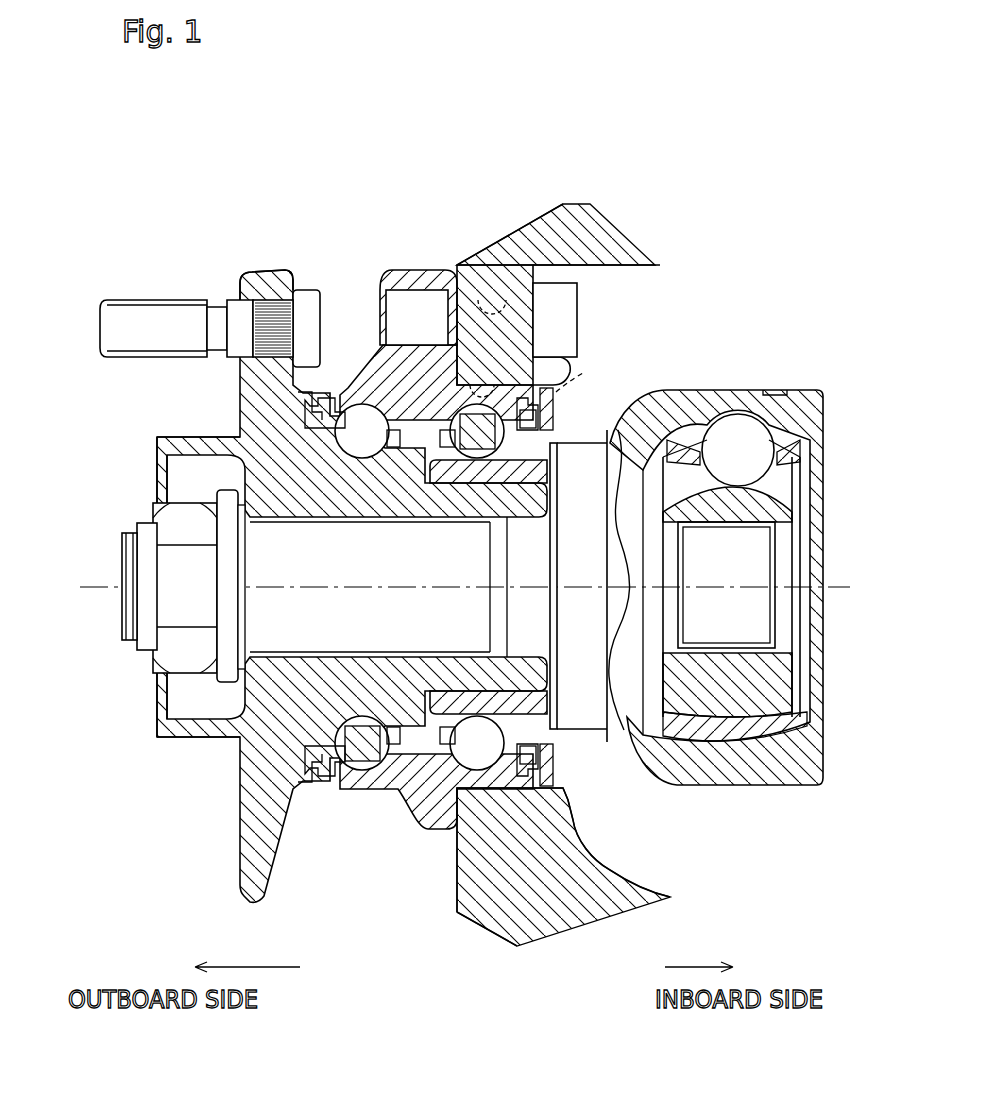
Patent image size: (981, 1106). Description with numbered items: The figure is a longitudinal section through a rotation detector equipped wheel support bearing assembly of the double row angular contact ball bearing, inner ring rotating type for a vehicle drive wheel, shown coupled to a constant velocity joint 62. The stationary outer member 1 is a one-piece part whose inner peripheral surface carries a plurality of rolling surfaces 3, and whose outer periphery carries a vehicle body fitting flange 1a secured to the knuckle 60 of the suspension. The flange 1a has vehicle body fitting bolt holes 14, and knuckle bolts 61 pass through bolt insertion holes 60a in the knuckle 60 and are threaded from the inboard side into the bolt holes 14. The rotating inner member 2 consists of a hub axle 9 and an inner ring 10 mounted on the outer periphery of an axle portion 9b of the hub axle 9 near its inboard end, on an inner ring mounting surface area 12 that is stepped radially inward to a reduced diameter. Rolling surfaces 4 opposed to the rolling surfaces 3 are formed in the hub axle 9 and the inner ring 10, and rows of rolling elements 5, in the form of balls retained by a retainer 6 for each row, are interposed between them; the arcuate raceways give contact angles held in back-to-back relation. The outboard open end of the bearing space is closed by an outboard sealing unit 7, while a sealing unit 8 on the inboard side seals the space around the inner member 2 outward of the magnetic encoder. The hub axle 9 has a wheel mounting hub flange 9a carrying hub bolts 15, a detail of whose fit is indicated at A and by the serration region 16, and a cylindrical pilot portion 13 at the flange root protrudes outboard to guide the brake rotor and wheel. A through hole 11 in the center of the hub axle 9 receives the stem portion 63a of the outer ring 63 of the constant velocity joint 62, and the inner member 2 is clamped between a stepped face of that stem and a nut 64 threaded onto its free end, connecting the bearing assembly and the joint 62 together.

The outer member 1 is at (383, 800).
The vehicle body fitting flange 1a is at (405, 270).
The inner member 2 is at (70, 455).
The rolling surfaces 3 is at (370, 775).
The rolling surfaces 4 is at (343, 750).
The rolling elements 5 is at (323, 793).
The retainer 6 is at (412, 772).
The outboard sealing unit 7 is at (320, 412).
The sealing unit 8 is at (560, 430).
The hub axle 9 is at (262, 465).
The wheel mounting hub flange 9a is at (285, 270).
The axle portion 9b is at (606, 462).
The inner ring 10 is at (530, 465).
The through hole 11 is at (363, 653).
The inner ring mounting surface area 12 is at (562, 472).
The pilot portion 13 is at (165, 437).
The vehicle body fitting bolt holes 14 is at (388, 300).
The hub bolts 15 is at (163, 300).
The serration of hub bolt 16 is at (265, 300).
The knuckle 60 is at (515, 242).
The bolt insertion holes 60a is at (485, 296).
The knuckle bolts 61 is at (565, 300).
The constant velocity joint 62 is at (795, 345).
The outer ring 63 is at (745, 390).
The stem portion 63a is at (120, 600).
The nut 64 is at (173, 560).
The detail region A is at (578, 375).